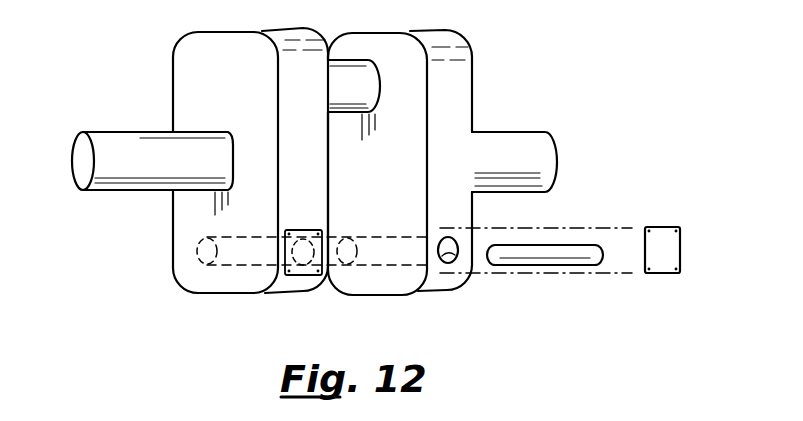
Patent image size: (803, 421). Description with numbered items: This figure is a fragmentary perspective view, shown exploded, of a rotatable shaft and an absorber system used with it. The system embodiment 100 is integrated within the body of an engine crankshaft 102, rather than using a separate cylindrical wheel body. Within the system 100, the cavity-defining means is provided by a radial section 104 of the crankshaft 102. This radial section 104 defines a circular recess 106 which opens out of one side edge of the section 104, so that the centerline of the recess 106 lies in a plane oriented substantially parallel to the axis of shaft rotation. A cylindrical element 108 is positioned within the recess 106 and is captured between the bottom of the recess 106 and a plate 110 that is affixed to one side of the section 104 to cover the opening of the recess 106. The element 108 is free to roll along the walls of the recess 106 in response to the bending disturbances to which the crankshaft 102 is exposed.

The system embodiment 100 is at (481, 45).
The engine crankshaft 102 is at (528, 140).
The radial section 104 is at (462, 82).
The circular recess 106 is at (443, 262).
The cylindrical element 108 is at (558, 256).
The plate 110 is at (657, 232).